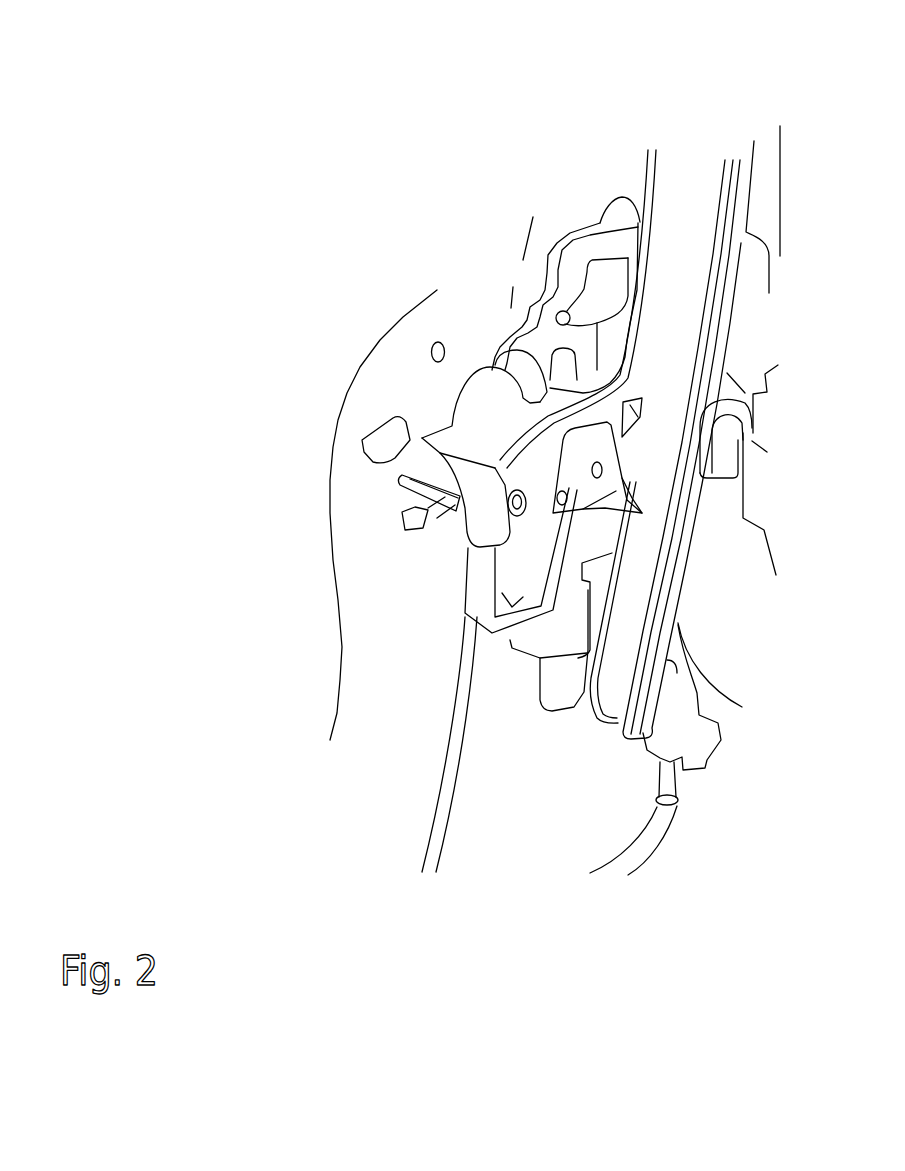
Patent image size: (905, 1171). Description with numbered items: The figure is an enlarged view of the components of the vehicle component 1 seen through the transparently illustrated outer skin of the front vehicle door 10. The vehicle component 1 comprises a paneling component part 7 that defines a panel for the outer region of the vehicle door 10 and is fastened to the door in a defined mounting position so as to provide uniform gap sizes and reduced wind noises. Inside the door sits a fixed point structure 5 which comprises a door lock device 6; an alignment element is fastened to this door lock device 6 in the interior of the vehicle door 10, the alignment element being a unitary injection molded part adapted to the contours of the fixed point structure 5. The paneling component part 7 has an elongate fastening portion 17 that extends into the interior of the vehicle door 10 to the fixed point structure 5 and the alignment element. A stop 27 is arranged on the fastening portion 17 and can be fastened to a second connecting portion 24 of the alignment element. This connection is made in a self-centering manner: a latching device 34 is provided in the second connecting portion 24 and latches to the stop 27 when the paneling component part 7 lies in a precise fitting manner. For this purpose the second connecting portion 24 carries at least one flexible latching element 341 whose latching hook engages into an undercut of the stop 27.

The vehicle component 1 is at (346, 131).
The fixed point structure 5 is at (596, 200).
The door lock device 6 is at (548, 243).
The paneling component part 7 is at (711, 158).
The vehicle door 10 is at (282, 376).
The fastening portion 17 is at (684, 282).
The second connecting portion 24 is at (483, 451).
The stop 27 is at (547, 428).
The latching device 34 is at (573, 462).
The flexible latching element 341 is at (578, 487).